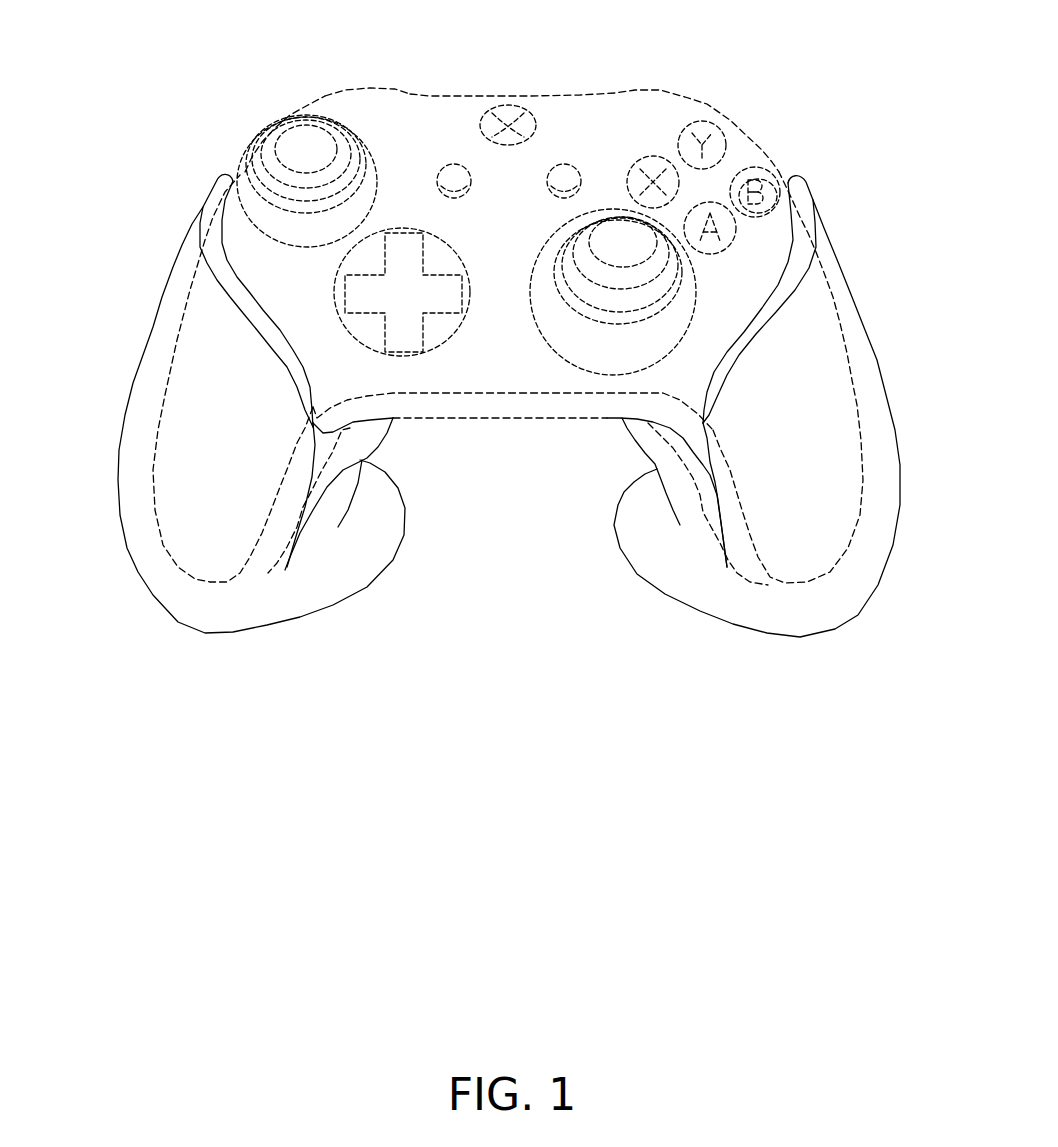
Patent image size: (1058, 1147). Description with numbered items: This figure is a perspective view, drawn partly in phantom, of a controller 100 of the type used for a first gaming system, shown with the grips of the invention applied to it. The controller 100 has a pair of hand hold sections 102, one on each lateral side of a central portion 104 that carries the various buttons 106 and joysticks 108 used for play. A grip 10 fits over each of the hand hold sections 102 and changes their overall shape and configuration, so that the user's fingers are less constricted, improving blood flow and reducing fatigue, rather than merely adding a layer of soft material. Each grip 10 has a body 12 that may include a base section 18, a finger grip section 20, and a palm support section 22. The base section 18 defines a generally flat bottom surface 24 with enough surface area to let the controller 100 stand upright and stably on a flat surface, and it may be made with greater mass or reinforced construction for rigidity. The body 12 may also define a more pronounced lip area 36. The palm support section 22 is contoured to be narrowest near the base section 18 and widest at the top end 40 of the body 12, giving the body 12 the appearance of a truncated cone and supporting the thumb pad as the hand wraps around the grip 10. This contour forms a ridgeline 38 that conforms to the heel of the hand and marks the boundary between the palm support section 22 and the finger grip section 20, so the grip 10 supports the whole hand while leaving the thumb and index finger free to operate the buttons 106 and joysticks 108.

The controller 100 is at (657, 80).
The hand hold sections 102 is at (155, 482).
The central portion 104 is at (417, 127).
The buttons 106 is at (727, 143).
The joysticks 108 is at (608, 247).
The grip 10 is at (134, 371).
The body 12 is at (173, 265).
The base section 18 is at (397, 553).
The finger grip section 20 is at (343, 487).
The palm support section 22 is at (175, 437).
The bottom surface 24 is at (335, 607).
The lip area 36 is at (387, 522).
The ridgeline 38 is at (511, 570).
The top end 40 is at (812, 271).